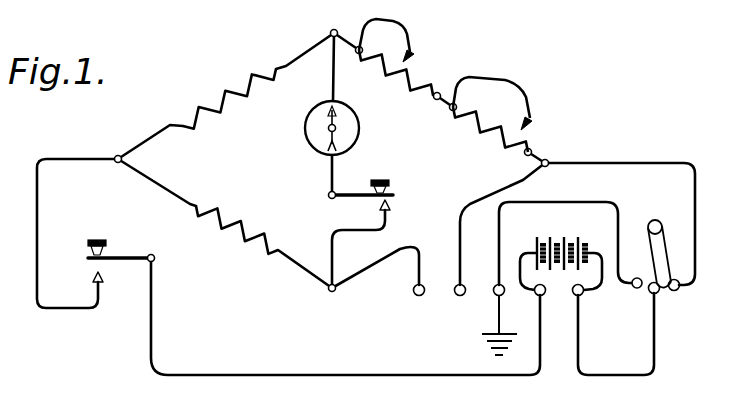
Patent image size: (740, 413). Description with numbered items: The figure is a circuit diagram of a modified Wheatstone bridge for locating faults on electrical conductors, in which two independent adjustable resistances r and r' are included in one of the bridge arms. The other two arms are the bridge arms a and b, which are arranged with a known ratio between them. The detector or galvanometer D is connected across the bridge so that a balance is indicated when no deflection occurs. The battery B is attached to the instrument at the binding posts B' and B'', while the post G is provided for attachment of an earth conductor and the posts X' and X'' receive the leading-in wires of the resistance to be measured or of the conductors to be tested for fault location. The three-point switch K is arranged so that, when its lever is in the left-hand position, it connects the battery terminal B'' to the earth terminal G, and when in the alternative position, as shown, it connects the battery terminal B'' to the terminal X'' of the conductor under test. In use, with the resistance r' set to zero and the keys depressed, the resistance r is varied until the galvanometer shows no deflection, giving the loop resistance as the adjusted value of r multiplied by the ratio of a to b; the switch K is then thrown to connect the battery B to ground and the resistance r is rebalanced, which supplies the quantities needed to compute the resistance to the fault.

The bridge arm b is at (238, 81).
The bridge arm a is at (245, 239).
The adjustable resistance r is at (396, 61).
The adjustable resistance r' is at (492, 114).
The detector D is at (358, 125).
The post X' is at (411, 310).
The post X'' is at (453, 310).
The post G is at (504, 296).
The battery B is at (561, 252).
The binding post B' is at (550, 306).
The binding post B'' is at (591, 306).
The three-point switch K is at (664, 242).